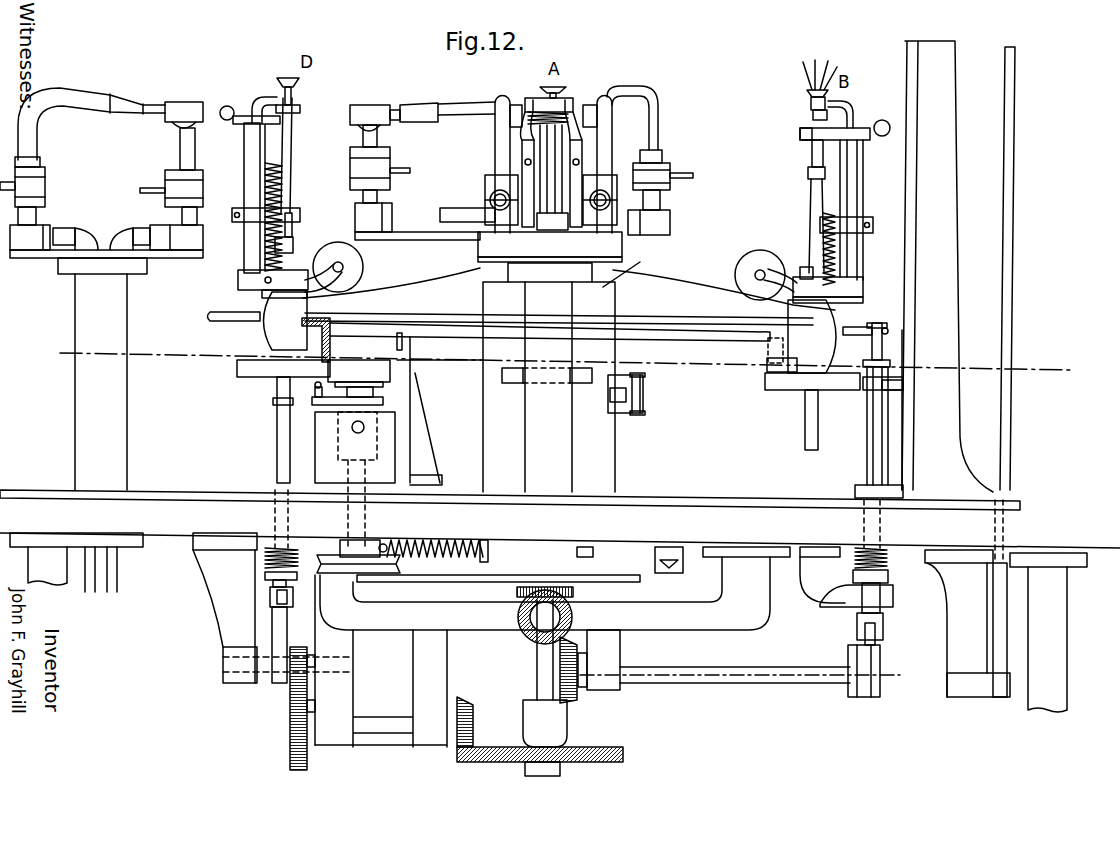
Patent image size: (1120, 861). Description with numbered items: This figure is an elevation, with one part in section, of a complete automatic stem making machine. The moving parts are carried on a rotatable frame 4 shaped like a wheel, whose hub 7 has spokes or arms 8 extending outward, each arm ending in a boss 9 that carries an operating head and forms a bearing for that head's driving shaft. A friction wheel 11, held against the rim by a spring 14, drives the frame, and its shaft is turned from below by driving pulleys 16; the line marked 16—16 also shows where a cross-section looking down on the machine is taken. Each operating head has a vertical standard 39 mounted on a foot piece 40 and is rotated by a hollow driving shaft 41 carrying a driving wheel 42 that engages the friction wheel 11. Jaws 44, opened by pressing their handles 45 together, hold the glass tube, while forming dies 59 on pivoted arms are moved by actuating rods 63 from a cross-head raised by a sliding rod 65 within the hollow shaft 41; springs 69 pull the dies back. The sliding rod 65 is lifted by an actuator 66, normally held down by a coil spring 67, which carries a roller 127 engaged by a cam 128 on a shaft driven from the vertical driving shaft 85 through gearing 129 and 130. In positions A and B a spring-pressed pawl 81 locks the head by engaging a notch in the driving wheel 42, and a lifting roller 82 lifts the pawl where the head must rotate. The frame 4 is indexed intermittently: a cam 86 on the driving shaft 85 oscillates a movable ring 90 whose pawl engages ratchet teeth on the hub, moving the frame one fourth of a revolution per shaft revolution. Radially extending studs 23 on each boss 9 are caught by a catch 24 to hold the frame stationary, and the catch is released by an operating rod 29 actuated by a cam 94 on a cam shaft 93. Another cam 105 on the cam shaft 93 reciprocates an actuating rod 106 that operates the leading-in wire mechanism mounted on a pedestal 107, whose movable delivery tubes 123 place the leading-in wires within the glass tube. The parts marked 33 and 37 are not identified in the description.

The rotatable frame 4 is at (650, 284).
The hub 7 is at (624, 268).
The spokes or arms 8 is at (440, 283).
The boss 9 is at (286, 321).
The friction wheel 11 is at (397, 442).
The spring 14 is at (446, 556).
The driving pulleys 16 is at (565, 363).
The radially extending studs 23 is at (207, 318).
The catch 24 is at (881, 326).
The operating rod 29 is at (867, 462).
The burner fitting 33 is at (277, 113).
The bracket 37 is at (96, 592).
The vertical standard 39 is at (244, 183).
The foot piece 40 is at (238, 279).
The hollow driving shaft 41 is at (240, 368).
The driving wheel 42 is at (766, 386).
The jaws 44 is at (296, 84).
The handle 45 is at (228, 121).
The forming dies 59 is at (800, 133).
The actuating rods 63 is at (293, 168).
The sliding rod 65 is at (277, 390).
The actuator 66 is at (278, 427).
The coil spring 67 is at (290, 555).
The springs 69 is at (834, 250).
The spring-pressed pawl 81 is at (322, 343).
The lifting roller 82 is at (397, 343).
The vertical driving shaft 85 is at (540, 777).
The cam 86 is at (642, 585).
The movable ring 90 is at (487, 390).
The cam shaft 93 is at (752, 672).
The cam 94 is at (880, 660).
The cam 105 is at (1000, 628).
The actuating rod 106 is at (1010, 430).
The pedestal 107 is at (950, 255).
The movable delivery tubes 123 is at (808, 72).
The roller 127 is at (270, 597).
The cam 128 is at (272, 622).
The gearing 129 is at (307, 663).
The gearing 130 is at (470, 745).